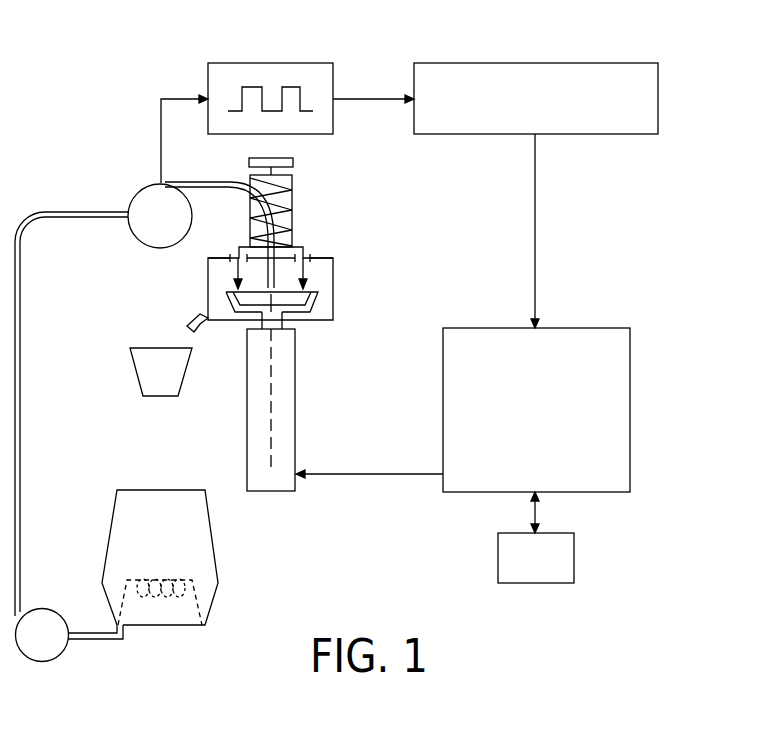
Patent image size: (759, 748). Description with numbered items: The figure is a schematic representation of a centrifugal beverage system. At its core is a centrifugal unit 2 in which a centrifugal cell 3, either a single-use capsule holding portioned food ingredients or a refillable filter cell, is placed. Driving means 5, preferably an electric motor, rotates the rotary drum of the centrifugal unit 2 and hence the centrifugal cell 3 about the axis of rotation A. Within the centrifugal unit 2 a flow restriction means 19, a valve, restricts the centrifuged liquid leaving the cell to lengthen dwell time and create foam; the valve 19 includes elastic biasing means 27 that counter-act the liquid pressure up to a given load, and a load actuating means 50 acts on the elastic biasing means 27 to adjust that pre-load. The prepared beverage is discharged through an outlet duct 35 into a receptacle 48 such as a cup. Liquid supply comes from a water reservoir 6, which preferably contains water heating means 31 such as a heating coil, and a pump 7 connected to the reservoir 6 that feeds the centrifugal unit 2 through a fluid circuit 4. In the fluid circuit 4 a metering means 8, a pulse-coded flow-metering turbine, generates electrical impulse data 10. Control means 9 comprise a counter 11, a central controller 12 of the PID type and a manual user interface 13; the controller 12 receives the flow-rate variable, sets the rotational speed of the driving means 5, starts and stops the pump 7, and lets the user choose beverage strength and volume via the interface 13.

The centrifugal unit 2 is at (326, 321).
The centrifugal cell 3 is at (329, 304).
The fluid circuit 4 is at (63, 211).
The driving means 5 is at (271, 492).
The water reservoir 6 is at (219, 581).
The pump 7 is at (41, 663).
The metering means 8 is at (143, 191).
The control means 9 is at (670, 172).
The electrical impulse data 10 is at (231, 63).
The counter 11 is at (659, 74).
The central controller 12 is at (631, 340).
The manual user interface 13 is at (575, 545).
The flow restriction means 19 is at (325, 262).
The elastic biasing means 27 is at (293, 197).
The water heating means 31 is at (123, 605).
The outlet duct 35 is at (198, 320).
The receptacle 48 is at (130, 366).
The load actuating means 50 is at (303, 162).
The axis of rotation A is at (272, 407).